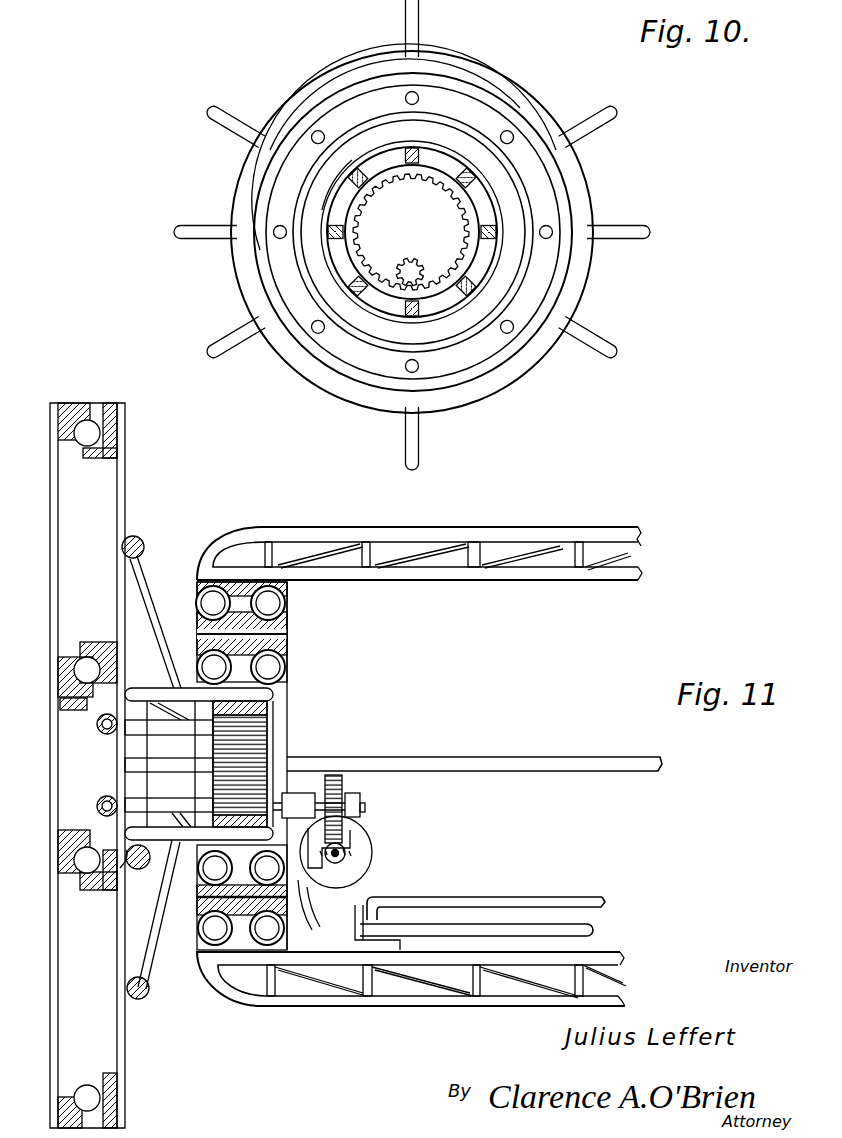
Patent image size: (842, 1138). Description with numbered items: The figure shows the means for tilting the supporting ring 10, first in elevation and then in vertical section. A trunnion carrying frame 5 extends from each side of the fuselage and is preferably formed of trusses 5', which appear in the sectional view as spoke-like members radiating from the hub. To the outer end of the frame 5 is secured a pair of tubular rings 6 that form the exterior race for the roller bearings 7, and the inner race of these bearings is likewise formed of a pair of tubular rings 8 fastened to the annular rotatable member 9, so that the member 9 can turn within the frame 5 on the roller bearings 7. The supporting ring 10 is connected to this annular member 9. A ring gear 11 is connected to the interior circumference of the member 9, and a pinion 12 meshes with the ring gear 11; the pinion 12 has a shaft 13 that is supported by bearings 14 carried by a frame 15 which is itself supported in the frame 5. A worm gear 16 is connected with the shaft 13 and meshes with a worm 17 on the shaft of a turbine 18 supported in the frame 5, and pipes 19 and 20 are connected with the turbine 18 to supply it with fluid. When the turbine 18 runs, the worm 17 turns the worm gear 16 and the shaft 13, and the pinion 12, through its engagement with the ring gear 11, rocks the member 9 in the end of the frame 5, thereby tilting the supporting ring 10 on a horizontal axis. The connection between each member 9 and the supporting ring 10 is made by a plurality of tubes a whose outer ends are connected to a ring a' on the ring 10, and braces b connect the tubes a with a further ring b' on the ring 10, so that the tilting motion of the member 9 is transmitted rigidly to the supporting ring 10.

In FIG. 10, the trunnion carrying frame 5 is at (426, 235).
In FIG. 11, the trunnion carrying frame 5 is at (616, 502).
In FIG. 11, the trusses 5' is at (419, 530).
In FIG. 10, the tubular rings 6 is at (486, 358).
In FIG. 11, the tubular rings 6 is at (208, 605).
In FIG. 10, the roller bearings 7 is at (408, 369).
In FIG. 11, the roller bearings 7 is at (197, 628).
In FIG. 10, the tubular rings 8 is at (497, 314).
In FIG. 11, the tubular rings 8 is at (293, 663).
In FIG. 10, the annular rotatable member 9 is at (413, 232).
In FIG. 11, the annular rotatable member 9 is at (290, 698).
In FIG. 11, the supporting ring 10 is at (108, 765).
In FIG. 10, the ring gear 11 is at (466, 246).
In FIG. 10, the pinion 12 is at (412, 264).
In FIG. 11, the pinion 12 is at (230, 800).
In FIG. 11, the shaft 13 is at (326, 778).
In FIG. 11, the bearings 14 is at (355, 801).
In FIG. 11, the frame 15 is at (353, 847).
In FIG. 11, the worm gear 16 is at (340, 783).
In FIG. 11, the worm 17 is at (322, 905).
In FIG. 11, the turbine 18 is at (370, 853).
In FIG. 11, the pipe 19 is at (527, 897).
In FIG. 11, the pipe 20 is at (563, 927).
In FIG. 10, the tubes a is at (412, 241).
In FIG. 11, the tubes a is at (108, 893).
In FIG. 11, the ring a' is at (159, 870).
In FIG. 11, the braces b is at (156, 762).
In FIG. 11, the ring b' is at (160, 1005).